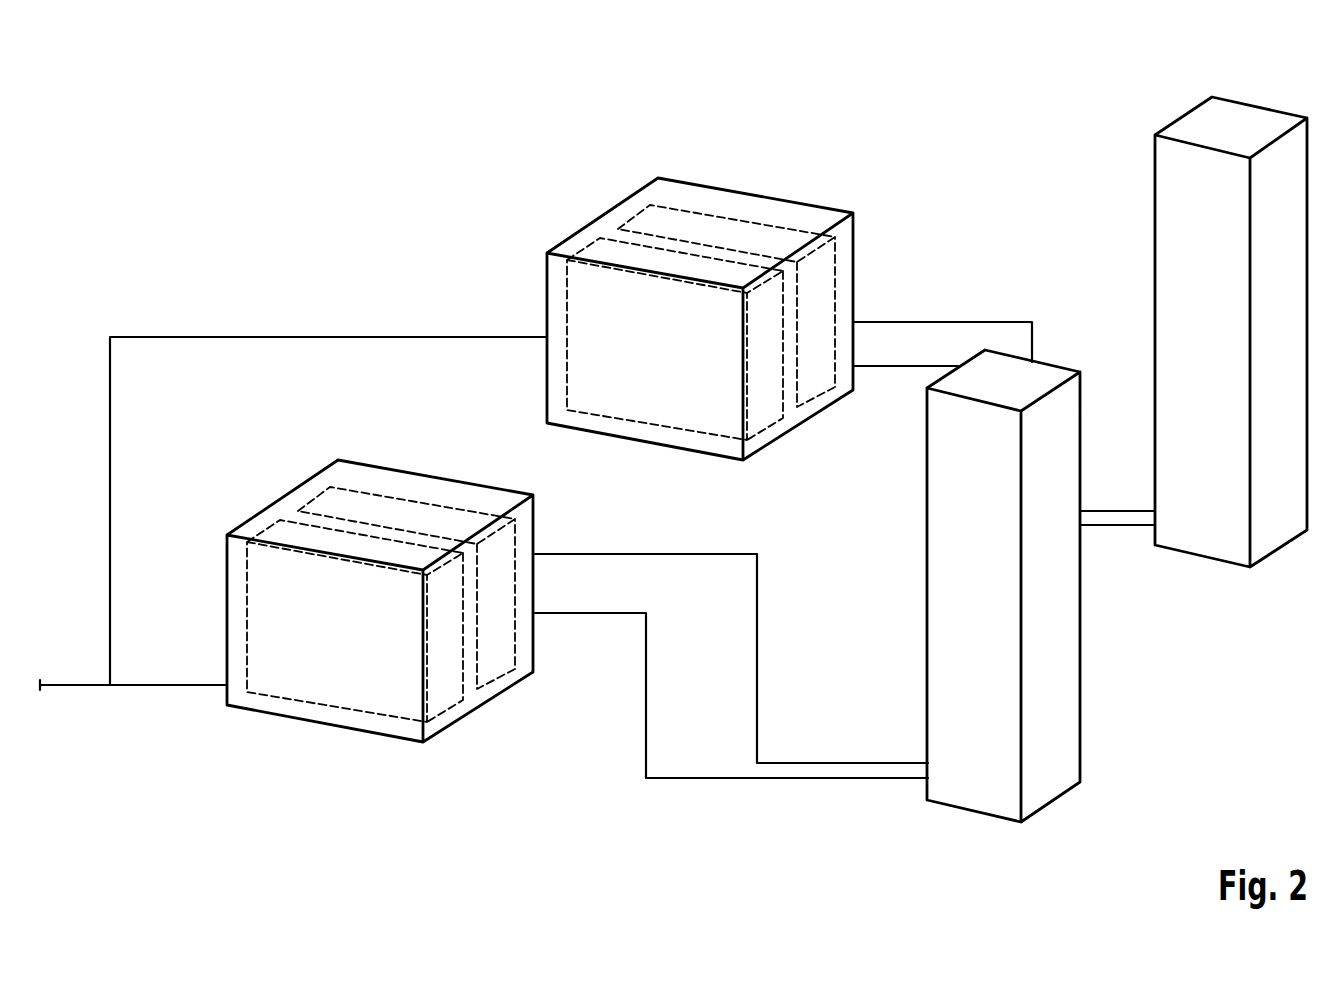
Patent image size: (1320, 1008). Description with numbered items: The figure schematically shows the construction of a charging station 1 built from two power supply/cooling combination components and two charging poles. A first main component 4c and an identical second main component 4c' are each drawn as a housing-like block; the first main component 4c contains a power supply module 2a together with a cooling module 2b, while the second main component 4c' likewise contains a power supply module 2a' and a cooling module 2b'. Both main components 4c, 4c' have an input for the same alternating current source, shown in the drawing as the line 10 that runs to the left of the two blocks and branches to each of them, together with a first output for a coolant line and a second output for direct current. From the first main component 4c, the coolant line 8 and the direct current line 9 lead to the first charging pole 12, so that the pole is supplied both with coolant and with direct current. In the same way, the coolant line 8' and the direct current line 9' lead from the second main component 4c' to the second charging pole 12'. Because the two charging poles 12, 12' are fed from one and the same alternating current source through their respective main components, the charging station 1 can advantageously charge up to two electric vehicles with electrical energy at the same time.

The charging station 1 is at (344, 233).
The power supply module 2a is at (355, 659).
The cooling module 2b is at (406, 628).
The first main component 4c is at (380, 631).
The power supply module 2a' is at (634, 339).
The cooling module 2b' is at (726, 269).
The second main component 4c' is at (700, 291).
The coolant line 8 is at (731, 738).
The direct current line 9 is at (731, 658).
The coolant line 8' is at (905, 408).
The direct current line 9' is at (942, 300).
The supply line 10 is at (177, 688).
The first charging pole 12 is at (1003, 622).
The second charging pole 12' is at (1193, 368).